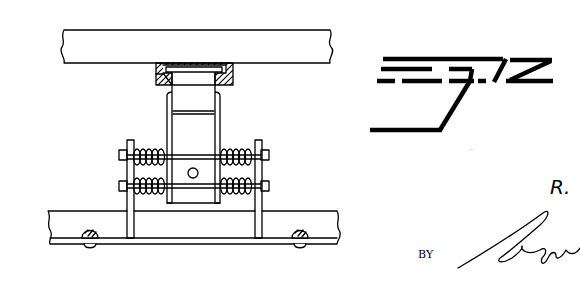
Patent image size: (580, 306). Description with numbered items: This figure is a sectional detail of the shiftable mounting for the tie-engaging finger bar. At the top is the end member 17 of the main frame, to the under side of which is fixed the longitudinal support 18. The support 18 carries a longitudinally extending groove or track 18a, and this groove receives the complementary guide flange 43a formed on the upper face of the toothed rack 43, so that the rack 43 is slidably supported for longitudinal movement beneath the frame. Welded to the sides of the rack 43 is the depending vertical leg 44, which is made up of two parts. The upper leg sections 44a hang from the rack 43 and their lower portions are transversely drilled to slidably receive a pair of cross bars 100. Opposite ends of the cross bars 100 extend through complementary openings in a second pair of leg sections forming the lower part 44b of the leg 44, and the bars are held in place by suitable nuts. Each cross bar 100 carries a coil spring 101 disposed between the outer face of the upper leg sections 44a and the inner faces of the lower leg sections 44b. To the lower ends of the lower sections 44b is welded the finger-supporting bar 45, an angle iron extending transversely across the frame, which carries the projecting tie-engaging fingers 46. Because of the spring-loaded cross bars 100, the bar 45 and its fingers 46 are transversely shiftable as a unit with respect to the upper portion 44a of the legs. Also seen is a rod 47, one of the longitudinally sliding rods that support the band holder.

The end member 17 is at (334, 42).
The longitudinal support 18 is at (232, 78).
The groove 18a is at (157, 75).
The toothed rack 43 is at (220, 101).
The guide flange 43a is at (217, 70).
The depending vertical leg 44 is at (157, 126).
The upper leg section 44a is at (221, 128).
The lower leg section 44b is at (262, 204).
The finger-supporting bar 45 is at (63, 210).
The tie-engaging finger 46 is at (84, 237).
The rod 47 is at (198, 173).
The cross bar 100 is at (182, 183).
The coil spring 101 is at (141, 144).